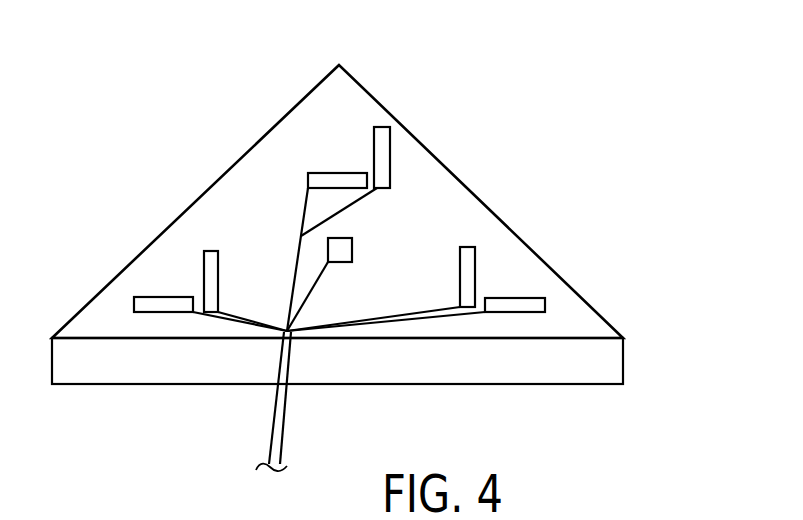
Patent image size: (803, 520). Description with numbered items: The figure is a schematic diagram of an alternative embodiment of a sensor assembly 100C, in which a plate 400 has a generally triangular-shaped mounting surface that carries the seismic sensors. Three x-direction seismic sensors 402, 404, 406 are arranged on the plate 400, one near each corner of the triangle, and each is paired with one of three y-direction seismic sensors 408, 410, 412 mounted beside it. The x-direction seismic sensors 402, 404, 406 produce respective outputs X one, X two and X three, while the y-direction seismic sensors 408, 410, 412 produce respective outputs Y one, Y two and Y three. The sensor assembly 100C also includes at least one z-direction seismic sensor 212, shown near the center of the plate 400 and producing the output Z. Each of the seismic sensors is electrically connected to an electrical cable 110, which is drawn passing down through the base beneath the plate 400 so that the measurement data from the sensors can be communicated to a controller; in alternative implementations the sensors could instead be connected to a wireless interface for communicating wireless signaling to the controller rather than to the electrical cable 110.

The sensor assembly 100C is at (583, 65).
The electrical cable 110 is at (283, 403).
The z-direction seismic sensor 212 is at (352, 244).
The plate 400 is at (485, 204).
The x-direction seismic sensor 402 is at (163, 297).
The x-direction seismic sensor 404 is at (515, 298).
The x-direction seismic sensor 406 is at (308, 173).
The y-direction seismic sensor 408 is at (209, 251).
The y-direction seismic sensor 410 is at (473, 247).
The y-direction seismic sensor 412 is at (389, 127).